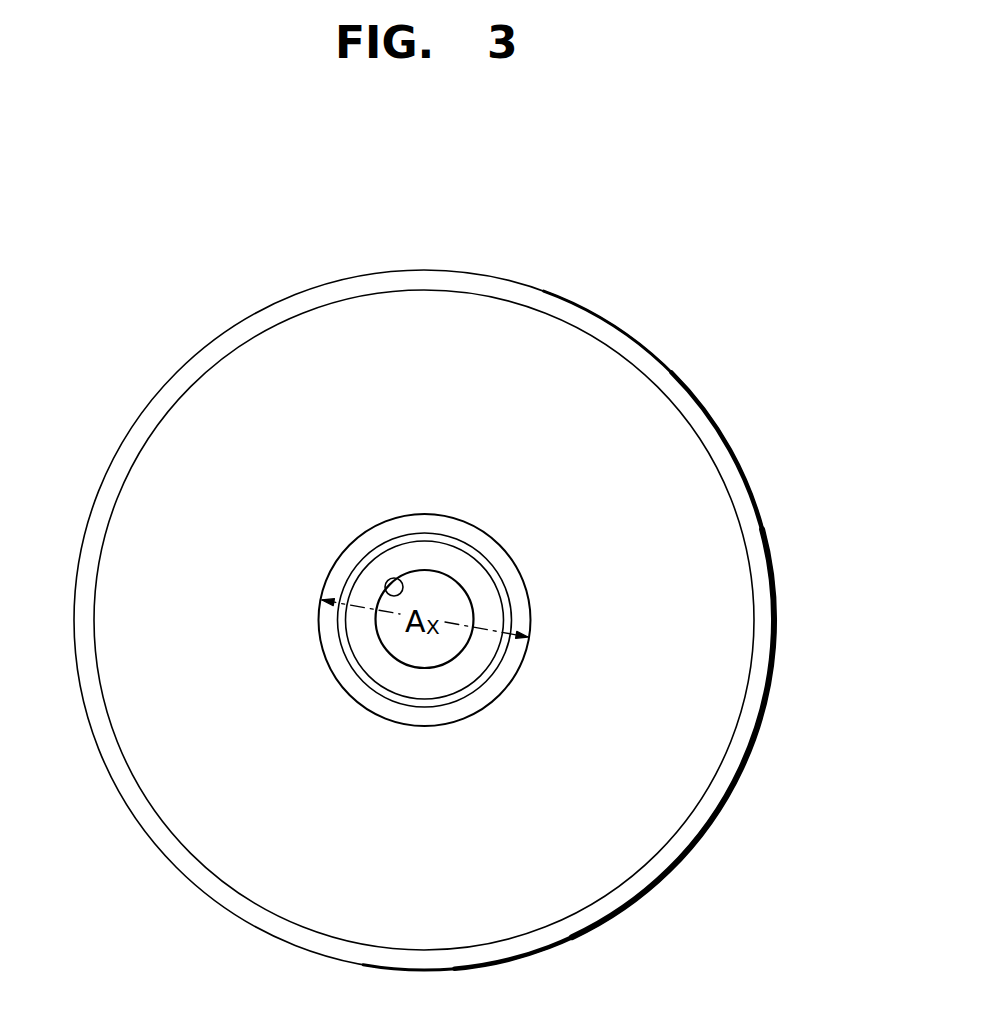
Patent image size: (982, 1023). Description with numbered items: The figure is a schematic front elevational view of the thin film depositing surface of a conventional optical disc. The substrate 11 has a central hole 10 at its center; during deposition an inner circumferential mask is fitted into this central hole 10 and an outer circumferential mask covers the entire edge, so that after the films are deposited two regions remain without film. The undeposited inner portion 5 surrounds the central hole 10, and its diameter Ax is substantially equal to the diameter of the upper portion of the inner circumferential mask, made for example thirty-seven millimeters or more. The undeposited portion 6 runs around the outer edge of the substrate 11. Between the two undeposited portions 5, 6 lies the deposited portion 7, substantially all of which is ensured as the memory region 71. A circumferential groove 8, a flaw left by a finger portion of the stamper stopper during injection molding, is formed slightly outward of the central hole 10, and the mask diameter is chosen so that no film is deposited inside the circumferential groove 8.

The undeposited inner portion 5 is at (362, 693).
The undeposited portion 6 is at (545, 938).
The deposited portion 7 is at (497, 620).
The memory region 71 is at (717, 572).
The circumferential groove 8 is at (480, 553).
The central hole 10 is at (382, 592).
The substrate 11 is at (746, 777).